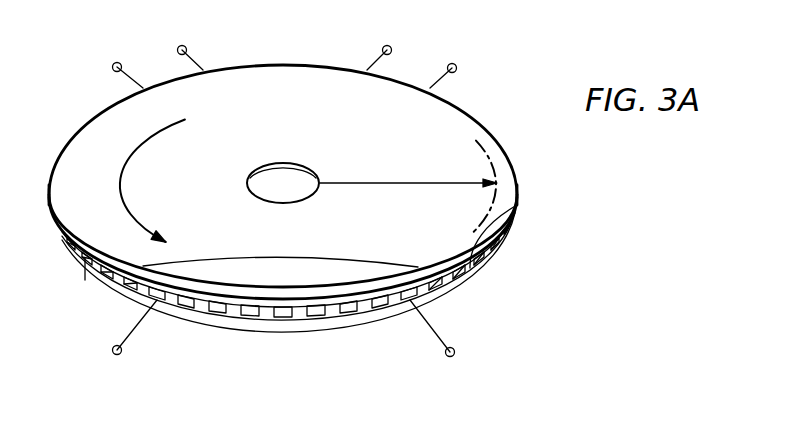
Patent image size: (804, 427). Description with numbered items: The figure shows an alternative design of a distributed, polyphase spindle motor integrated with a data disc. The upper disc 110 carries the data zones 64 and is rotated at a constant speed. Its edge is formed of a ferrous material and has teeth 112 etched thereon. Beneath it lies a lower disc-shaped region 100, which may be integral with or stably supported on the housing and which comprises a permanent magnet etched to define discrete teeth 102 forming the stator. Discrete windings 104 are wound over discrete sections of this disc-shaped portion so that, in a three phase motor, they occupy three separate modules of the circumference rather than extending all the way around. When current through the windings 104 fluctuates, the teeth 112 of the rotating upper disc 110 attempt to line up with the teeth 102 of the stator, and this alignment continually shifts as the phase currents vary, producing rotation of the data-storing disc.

The data zones 64 is at (410, 170).
The disc-shaped region 100 is at (433, 297).
The teeth 102 is at (507, 244).
The windings 104 is at (168, 47).
The upper disc 110 is at (448, 128).
The teeth 112 is at (107, 278).